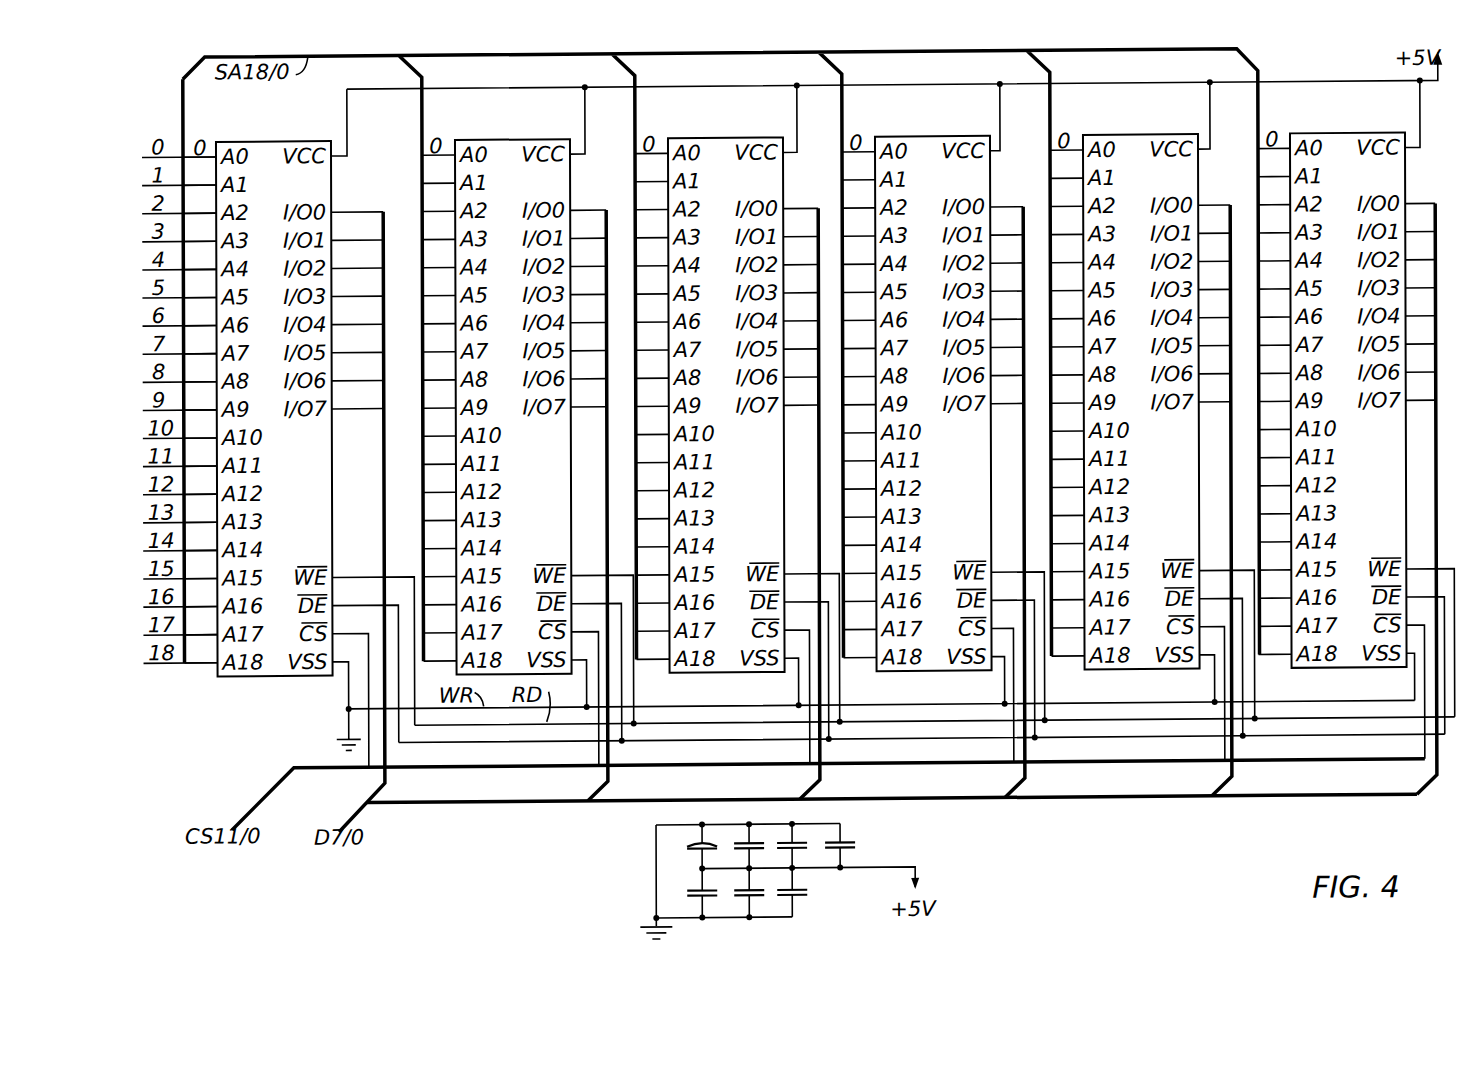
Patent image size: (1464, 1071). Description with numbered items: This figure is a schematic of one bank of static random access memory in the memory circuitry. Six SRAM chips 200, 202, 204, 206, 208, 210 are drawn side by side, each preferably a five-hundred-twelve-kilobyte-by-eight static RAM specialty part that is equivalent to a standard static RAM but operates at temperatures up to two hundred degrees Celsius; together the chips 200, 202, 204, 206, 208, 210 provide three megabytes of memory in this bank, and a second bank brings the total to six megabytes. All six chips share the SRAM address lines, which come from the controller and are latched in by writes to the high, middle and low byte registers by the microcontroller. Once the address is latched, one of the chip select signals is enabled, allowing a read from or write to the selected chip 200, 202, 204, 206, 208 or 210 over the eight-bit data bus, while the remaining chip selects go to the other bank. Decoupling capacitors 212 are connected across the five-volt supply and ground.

The SRAM chip 200 is at (271, 140).
The SRAM chip 202 is at (511, 140).
The SRAM chip 204 is at (724, 140).
The SRAM chip 206 is at (931, 140).
The SRAM chip 208 is at (1139, 140).
The SRAM chip 210 is at (1346, 140).
The decoupling capacitors 212 is at (630, 870).